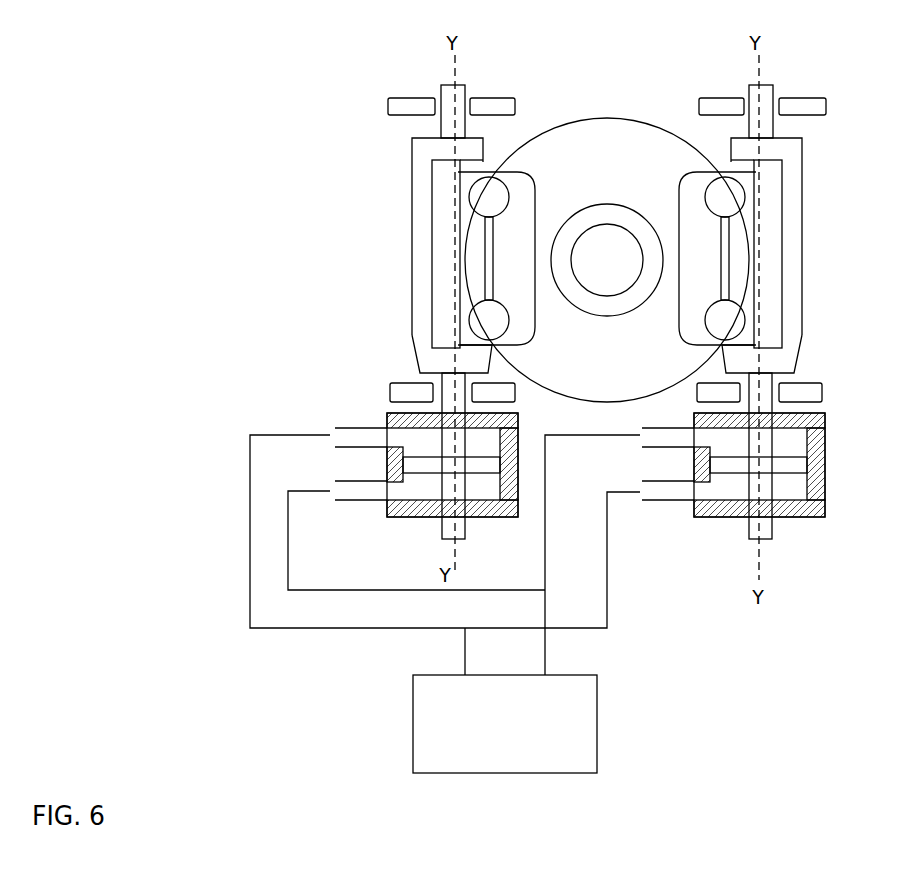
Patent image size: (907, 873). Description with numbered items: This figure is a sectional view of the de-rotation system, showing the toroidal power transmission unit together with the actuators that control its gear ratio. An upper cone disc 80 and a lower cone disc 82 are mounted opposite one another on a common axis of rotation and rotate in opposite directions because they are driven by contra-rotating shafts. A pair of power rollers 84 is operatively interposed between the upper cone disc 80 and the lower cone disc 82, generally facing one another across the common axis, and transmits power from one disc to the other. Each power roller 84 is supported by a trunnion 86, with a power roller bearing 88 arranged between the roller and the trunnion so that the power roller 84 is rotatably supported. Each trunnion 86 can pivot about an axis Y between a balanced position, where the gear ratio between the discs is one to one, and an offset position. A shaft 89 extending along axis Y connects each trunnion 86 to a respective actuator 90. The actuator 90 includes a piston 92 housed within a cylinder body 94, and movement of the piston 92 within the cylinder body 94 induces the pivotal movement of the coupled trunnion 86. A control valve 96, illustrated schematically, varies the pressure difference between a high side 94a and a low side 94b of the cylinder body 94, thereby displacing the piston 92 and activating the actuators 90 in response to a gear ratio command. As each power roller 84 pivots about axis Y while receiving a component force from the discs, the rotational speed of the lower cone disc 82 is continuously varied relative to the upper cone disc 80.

The upper cone disc 80 is at (607, 216).
The lower cone disc 82 is at (607, 260).
The power roller 84 is at (513, 202).
The trunnion 86 is at (404, 272).
The power roller bearing 88 is at (478, 322).
The shaft 89 is at (465, 90).
The actuator 90 is at (568, 448).
The piston 92 is at (438, 473).
The cylinder body 94 is at (606, 470).
The high side 94a is at (407, 438).
The low side 94b is at (405, 490).
The control valve 96 is at (505, 724).